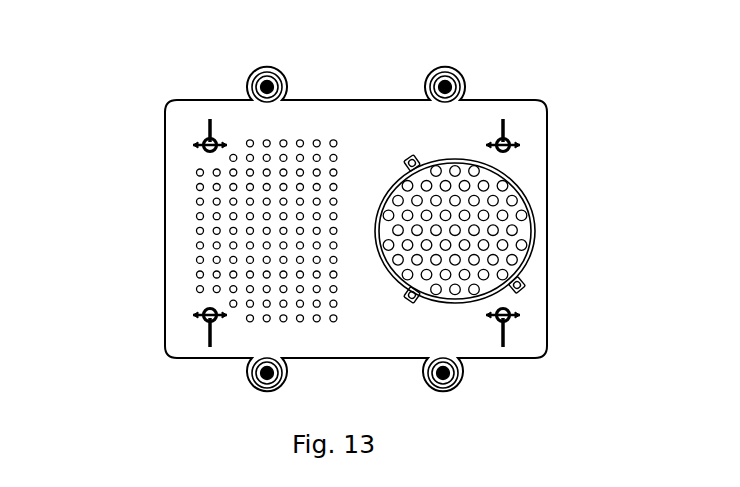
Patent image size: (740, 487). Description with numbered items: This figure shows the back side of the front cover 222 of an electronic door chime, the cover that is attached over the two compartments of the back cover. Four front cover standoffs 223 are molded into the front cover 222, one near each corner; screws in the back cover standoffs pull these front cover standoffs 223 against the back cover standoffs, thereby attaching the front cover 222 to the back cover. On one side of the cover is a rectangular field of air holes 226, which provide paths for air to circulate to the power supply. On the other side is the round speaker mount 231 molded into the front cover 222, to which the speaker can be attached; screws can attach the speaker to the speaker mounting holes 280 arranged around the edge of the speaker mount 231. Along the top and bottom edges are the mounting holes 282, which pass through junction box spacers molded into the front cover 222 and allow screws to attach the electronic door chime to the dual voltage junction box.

The front cover 222 is at (176, 120).
The front cover standoffs 223 is at (505, 142).
The air holes 226 is at (228, 235).
The speaker mount 231 is at (522, 189).
The speaker mounting holes 280 is at (521, 286).
The mounting holes 282 is at (443, 85).